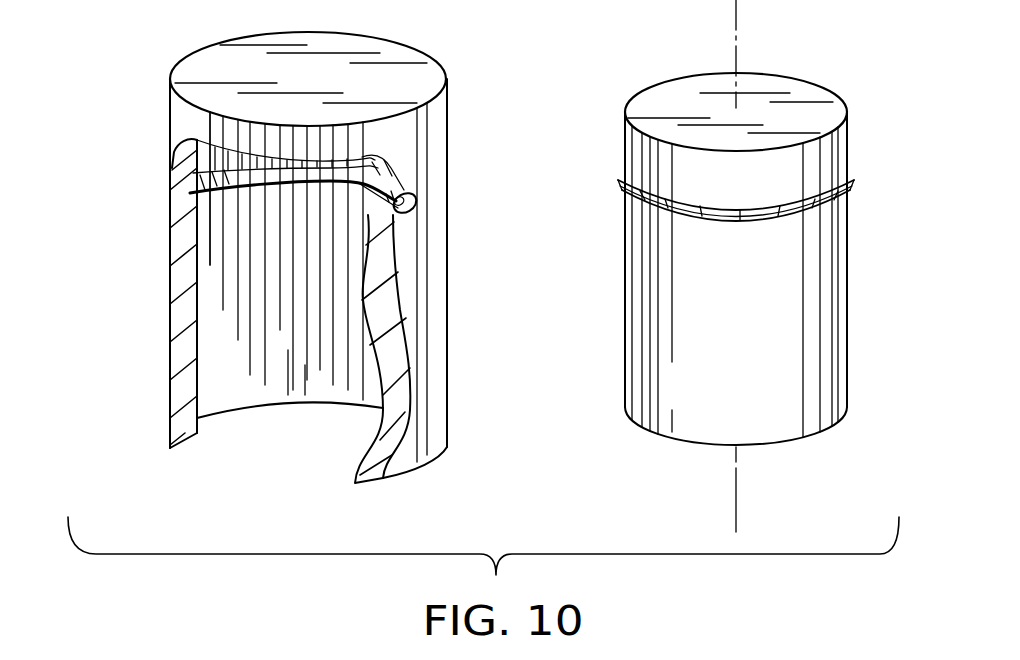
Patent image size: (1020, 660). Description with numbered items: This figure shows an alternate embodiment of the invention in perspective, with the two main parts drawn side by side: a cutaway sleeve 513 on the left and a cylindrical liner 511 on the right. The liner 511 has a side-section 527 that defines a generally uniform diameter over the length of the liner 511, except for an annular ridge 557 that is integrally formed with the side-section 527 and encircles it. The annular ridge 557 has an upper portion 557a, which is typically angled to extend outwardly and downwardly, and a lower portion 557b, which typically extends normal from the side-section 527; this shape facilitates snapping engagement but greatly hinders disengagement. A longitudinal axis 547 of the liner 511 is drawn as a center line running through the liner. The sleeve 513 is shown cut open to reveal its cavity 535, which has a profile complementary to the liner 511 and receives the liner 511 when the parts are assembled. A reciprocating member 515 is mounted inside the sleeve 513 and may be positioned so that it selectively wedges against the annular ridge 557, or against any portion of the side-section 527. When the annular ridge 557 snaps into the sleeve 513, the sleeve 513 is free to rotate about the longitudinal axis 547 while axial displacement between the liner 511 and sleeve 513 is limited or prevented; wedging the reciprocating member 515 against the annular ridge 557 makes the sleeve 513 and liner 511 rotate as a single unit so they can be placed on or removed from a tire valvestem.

The sleeve 513 is at (153, 38).
The reciprocating member 515 is at (404, 194).
The cavity 535 is at (260, 303).
The liner 511 is at (721, 229).
The side-section 527 is at (847, 305).
The longitudinal axis 547 is at (735, 3).
The annular ridge 557 is at (770, 188).
The upper portion of the annular ridge 557a is at (848, 178).
The lower portion of the annular ridge 557b is at (850, 198).